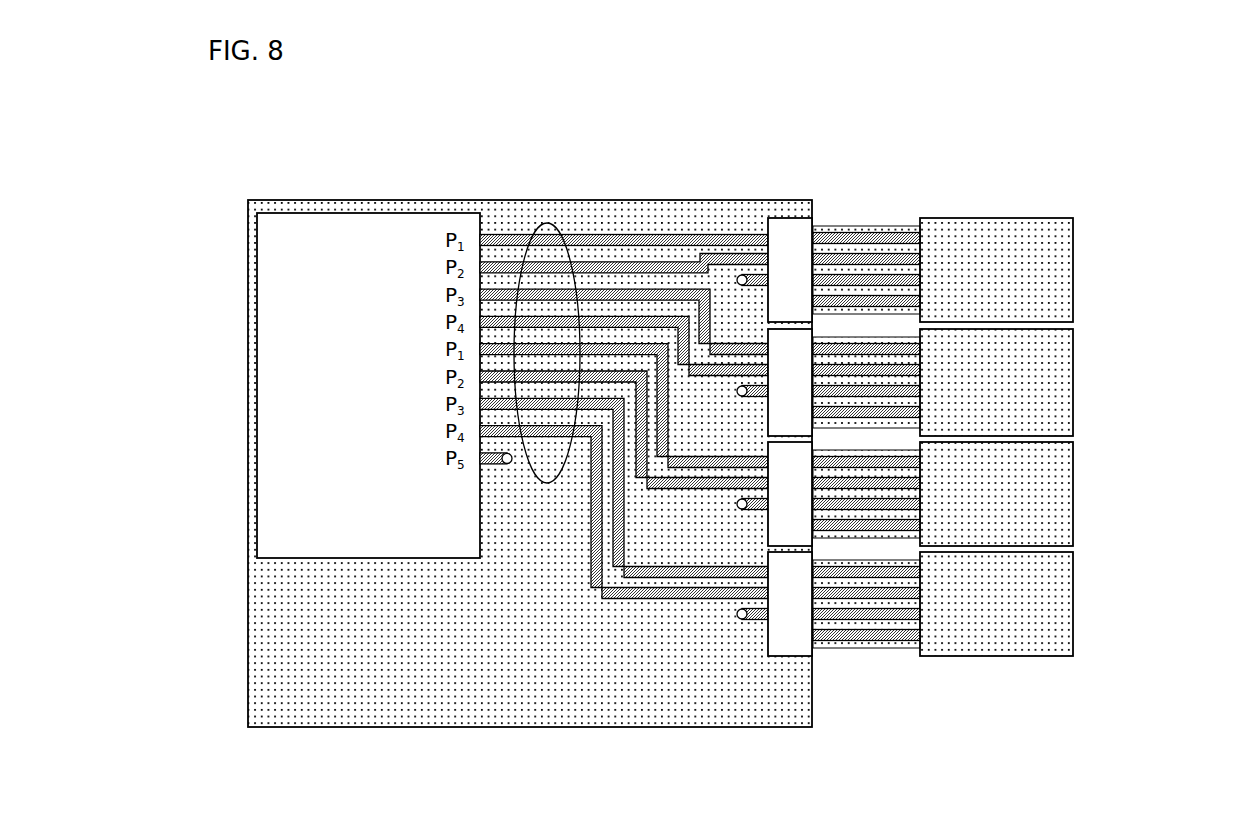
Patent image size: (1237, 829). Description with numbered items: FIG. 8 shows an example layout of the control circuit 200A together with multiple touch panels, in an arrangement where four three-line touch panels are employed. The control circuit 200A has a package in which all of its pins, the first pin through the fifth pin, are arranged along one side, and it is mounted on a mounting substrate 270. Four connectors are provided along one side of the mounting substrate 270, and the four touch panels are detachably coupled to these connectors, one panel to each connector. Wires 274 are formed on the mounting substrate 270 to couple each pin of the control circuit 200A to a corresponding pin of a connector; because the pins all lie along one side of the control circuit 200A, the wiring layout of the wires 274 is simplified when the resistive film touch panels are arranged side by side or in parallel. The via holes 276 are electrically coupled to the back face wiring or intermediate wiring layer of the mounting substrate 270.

The control circuit 200A is at (325, 212).
The mounting substrate 270 is at (500, 200).
The wires 274 is at (625, 290).
The via holes 276 is at (742, 275).